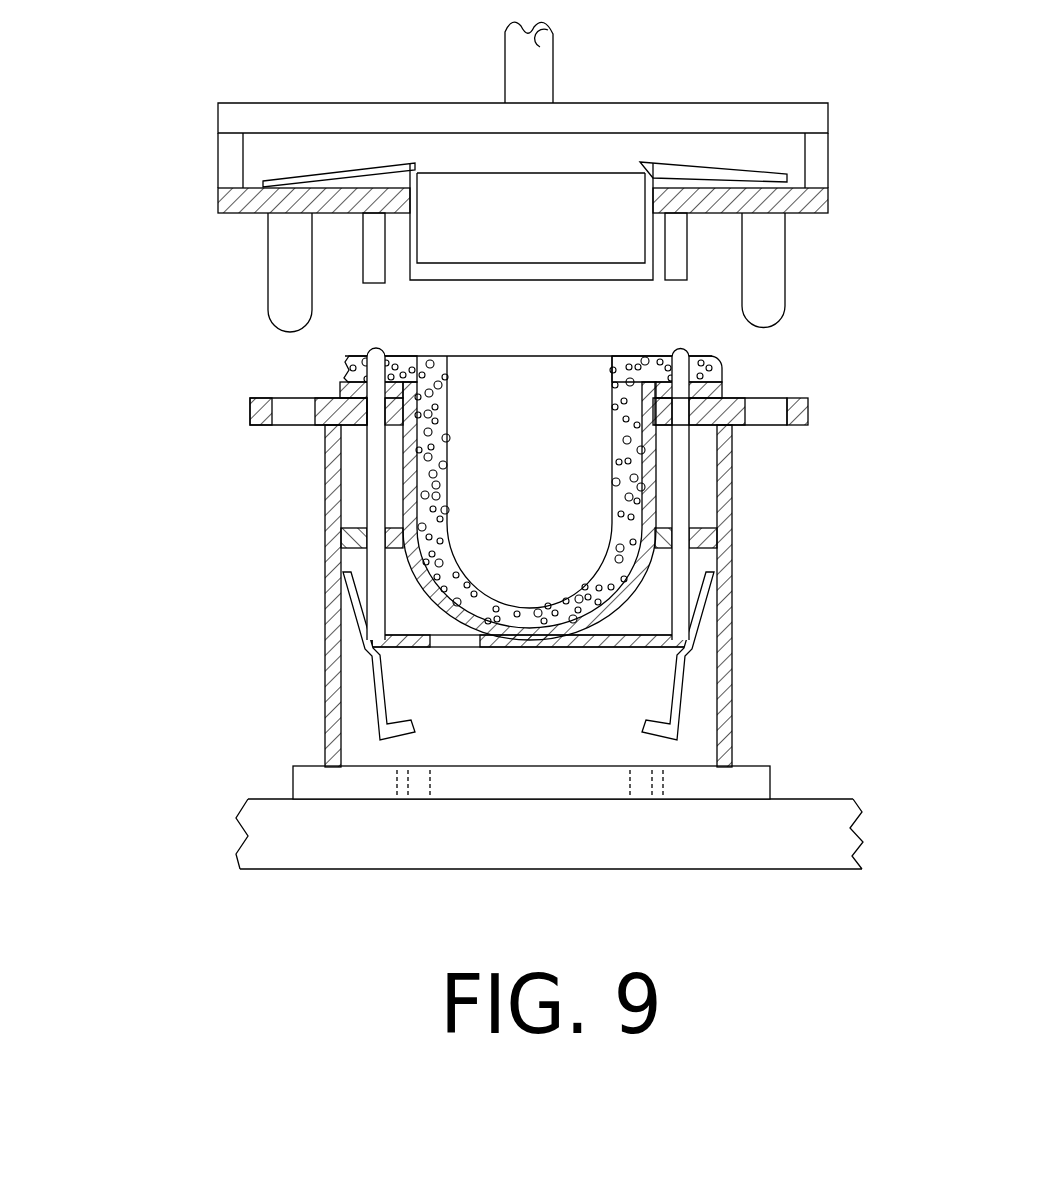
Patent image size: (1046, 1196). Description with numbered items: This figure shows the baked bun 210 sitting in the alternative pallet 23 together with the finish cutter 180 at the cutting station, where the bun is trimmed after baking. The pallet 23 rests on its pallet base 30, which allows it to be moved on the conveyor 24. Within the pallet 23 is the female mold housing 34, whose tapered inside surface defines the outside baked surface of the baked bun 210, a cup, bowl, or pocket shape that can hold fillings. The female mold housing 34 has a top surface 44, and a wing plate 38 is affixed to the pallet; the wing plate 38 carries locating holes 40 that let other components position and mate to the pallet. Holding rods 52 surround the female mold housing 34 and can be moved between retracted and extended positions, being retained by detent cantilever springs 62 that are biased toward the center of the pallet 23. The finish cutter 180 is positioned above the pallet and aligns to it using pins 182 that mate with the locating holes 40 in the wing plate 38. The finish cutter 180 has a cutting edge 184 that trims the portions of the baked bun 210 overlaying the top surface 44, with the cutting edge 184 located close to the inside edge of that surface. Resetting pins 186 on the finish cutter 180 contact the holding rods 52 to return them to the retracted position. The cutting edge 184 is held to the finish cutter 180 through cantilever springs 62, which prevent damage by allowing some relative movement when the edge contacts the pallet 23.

The finish cutter 180 is at (500, 195).
The pins 182 is at (768, 238).
The cutting edge 184 is at (612, 283).
The resetting pins 186 is at (367, 283).
The top surface 44 is at (347, 358).
The baked bun 210 is at (592, 410).
The locating holes 40 is at (765, 402).
The wing plate 38 is at (810, 408).
The holding rods 52 is at (375, 448).
The female mold housing 34 is at (405, 487).
The pallet 23 is at (504, 584).
The cantilever springs 62 is at (706, 683).
The pallet base 30 is at (747, 779).
The conveyor 24 is at (827, 837).